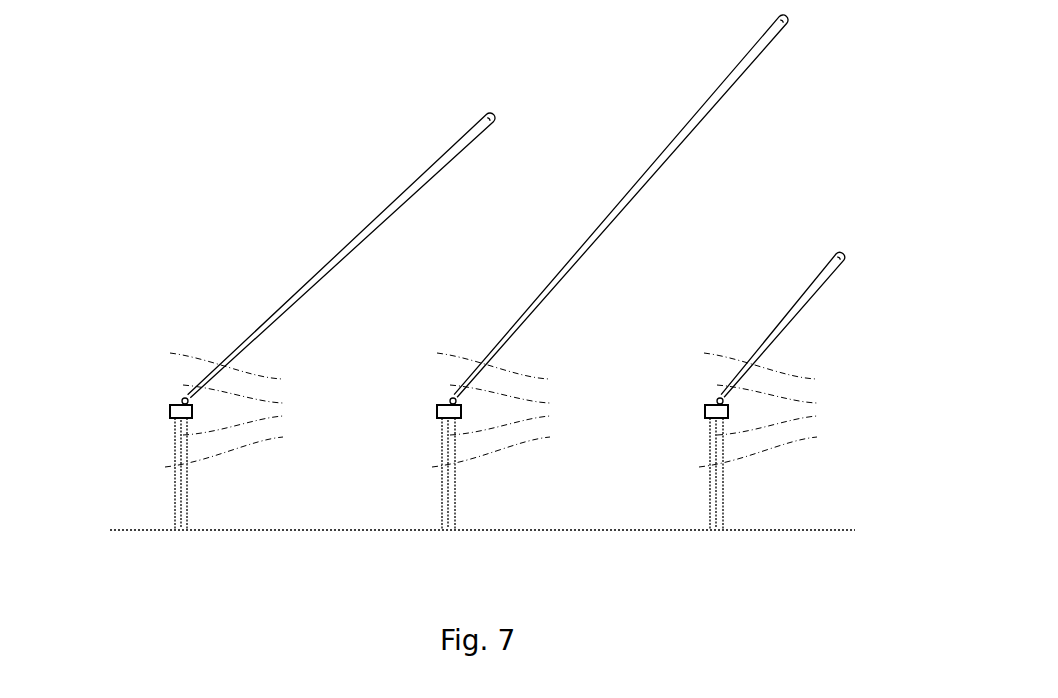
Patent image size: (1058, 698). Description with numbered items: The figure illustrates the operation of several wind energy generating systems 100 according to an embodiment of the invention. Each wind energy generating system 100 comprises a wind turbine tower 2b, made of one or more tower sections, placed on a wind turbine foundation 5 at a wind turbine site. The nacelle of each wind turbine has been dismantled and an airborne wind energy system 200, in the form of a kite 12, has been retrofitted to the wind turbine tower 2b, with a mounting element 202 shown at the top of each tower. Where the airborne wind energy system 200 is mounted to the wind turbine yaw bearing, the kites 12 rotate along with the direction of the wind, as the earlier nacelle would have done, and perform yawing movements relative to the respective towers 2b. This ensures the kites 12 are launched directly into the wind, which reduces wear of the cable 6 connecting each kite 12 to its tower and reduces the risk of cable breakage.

The cable 6 is at (367, 222).
The kite 12 is at (470, 113).
The airborne wind energy system 200 is at (186, 398).
The mounting bracket 202 is at (193, 419).
The wind energy generating system 100 is at (155, 493).
The wind turbine tower 2b is at (183, 490).
The wind turbine foundation 5 is at (197, 538).